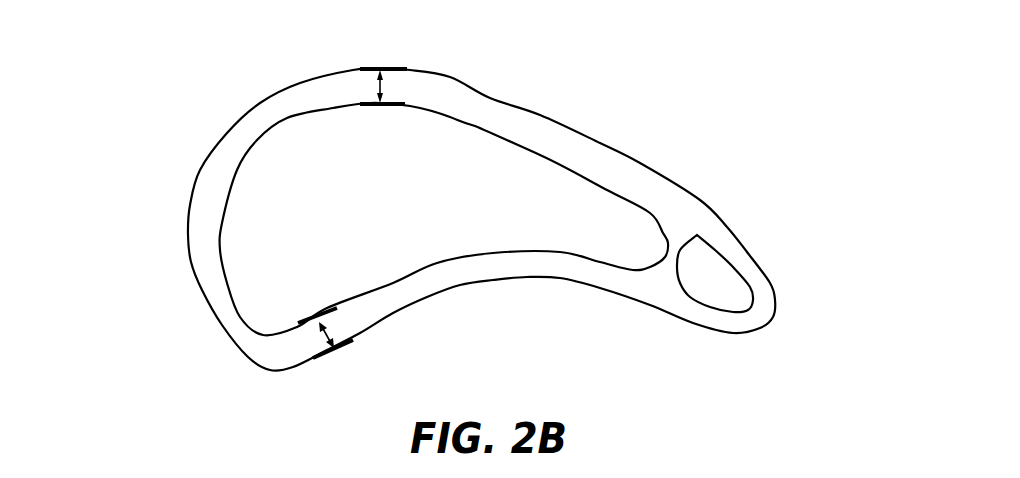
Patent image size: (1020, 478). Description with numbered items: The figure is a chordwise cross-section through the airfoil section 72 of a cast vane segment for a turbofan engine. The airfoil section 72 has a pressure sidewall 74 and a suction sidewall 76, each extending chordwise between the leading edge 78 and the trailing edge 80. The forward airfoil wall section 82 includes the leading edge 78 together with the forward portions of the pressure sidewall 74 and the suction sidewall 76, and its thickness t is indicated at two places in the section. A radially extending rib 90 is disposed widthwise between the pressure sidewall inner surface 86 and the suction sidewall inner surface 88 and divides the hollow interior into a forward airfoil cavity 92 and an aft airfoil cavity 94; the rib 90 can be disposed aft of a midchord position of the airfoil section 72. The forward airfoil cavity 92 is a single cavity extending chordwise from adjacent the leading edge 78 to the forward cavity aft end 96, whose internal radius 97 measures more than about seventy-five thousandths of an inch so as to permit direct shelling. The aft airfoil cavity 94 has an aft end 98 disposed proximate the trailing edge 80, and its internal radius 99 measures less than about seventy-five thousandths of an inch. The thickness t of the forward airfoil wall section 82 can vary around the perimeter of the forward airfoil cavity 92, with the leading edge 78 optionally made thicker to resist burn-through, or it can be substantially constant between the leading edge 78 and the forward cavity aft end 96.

The airfoil section 72 is at (797, 180).
The pressure sidewall 74 is at (412, 302).
The suction sidewall 76 is at (468, 104).
The leading edge 78 is at (183, 224).
The trailing edge 80 is at (773, 323).
The forward airfoil wall section 82 is at (300, 100).
The pressure sidewall inner surface 86 is at (437, 262).
The suction sidewall inner surface 88 is at (444, 219).
The rib 90 is at (675, 237).
The forward airfoil cavity 92 is at (527, 227).
The aft airfoil cavity 94 is at (713, 275).
The forward cavity aft end 96 is at (637, 233).
The forward cavity aft end internal radius 97 is at (665, 238).
The aft airfoil cavity aft end 98 is at (747, 253).
The aft airfoil cavity aft end internal radius 99 is at (745, 312).
The thickness t is at (383, 87).